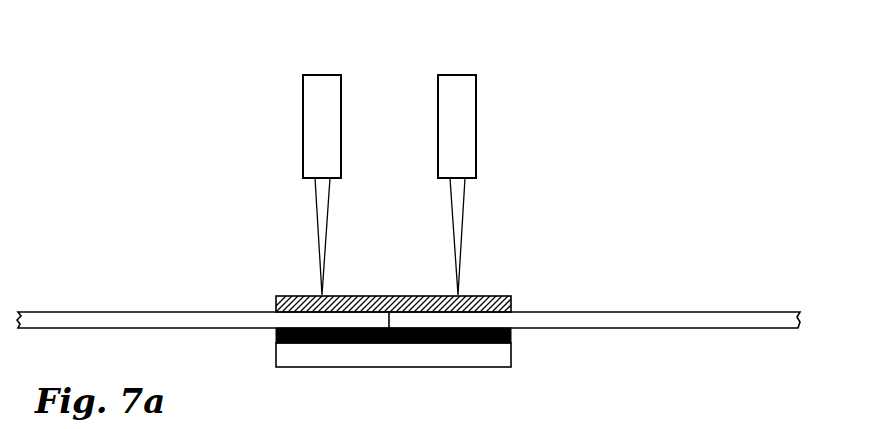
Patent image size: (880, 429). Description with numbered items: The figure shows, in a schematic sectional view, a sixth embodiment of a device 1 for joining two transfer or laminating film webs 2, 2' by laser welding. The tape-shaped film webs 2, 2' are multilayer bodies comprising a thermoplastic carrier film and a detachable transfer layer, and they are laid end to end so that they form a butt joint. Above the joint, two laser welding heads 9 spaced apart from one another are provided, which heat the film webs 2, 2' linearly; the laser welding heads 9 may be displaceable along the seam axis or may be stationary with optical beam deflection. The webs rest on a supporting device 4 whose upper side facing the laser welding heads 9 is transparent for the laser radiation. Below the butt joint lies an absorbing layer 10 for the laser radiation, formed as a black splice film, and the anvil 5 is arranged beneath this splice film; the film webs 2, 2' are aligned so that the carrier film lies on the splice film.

The device 1 is at (581, 157).
The film web 2 is at (203, 297).
The film web 2' is at (594, 298).
The supporting device 4 is at (364, 298).
The anvil 5 is at (372, 359).
The laser welding head 9 is at (446, 97).
The absorbing layer 10 is at (511, 337).